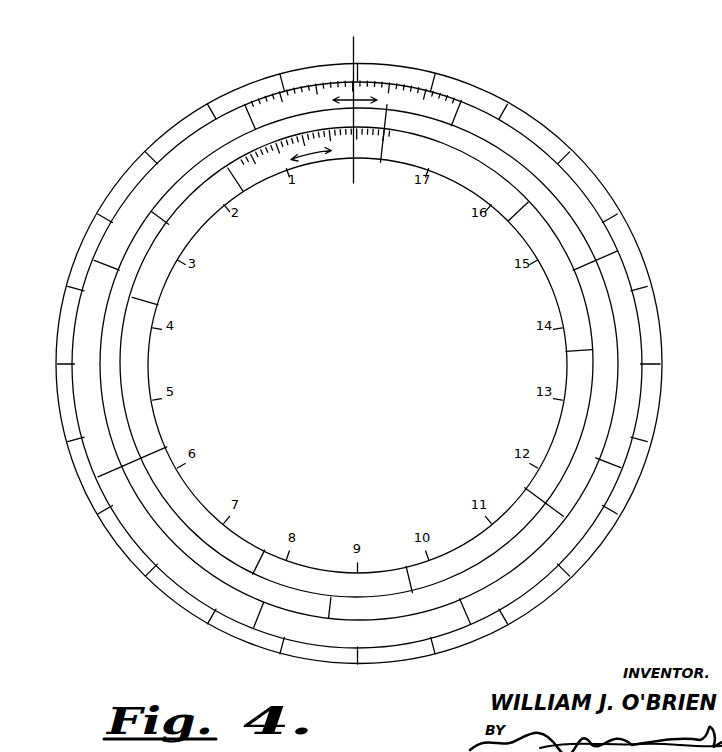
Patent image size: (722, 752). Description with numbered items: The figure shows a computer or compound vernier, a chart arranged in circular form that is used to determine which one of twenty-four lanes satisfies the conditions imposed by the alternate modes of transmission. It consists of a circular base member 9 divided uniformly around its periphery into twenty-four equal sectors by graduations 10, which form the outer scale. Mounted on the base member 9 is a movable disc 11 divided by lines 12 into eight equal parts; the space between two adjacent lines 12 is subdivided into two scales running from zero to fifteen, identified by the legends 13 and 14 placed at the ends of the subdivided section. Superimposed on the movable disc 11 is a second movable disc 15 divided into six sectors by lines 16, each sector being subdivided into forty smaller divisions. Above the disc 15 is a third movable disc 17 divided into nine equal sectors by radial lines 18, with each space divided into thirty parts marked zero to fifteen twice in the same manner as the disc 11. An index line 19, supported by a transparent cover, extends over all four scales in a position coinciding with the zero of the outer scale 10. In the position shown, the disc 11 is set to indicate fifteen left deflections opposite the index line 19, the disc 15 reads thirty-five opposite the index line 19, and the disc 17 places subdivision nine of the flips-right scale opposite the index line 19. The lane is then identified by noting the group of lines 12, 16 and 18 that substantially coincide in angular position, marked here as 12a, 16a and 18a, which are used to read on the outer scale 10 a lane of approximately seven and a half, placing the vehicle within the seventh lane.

The base member 9 is at (520, 117).
The graduations 10 is at (442, 70).
The movable disc 11 is at (569, 183).
The lines 12 is at (582, 268).
The line 12a is at (103, 477).
The legend 13 is at (239, 108).
The legend 14 is at (569, 170).
The second movable disc 15 is at (569, 237).
The lines 16 is at (612, 256).
The line 16a is at (127, 463).
The third movable disc 17 is at (582, 330).
The radial lines 18 is at (592, 355).
The radial line 18a is at (148, 452).
The index line 19 is at (356, 172).